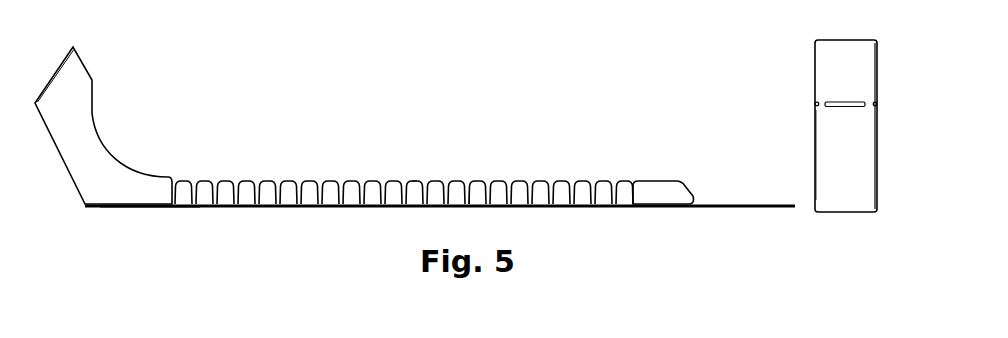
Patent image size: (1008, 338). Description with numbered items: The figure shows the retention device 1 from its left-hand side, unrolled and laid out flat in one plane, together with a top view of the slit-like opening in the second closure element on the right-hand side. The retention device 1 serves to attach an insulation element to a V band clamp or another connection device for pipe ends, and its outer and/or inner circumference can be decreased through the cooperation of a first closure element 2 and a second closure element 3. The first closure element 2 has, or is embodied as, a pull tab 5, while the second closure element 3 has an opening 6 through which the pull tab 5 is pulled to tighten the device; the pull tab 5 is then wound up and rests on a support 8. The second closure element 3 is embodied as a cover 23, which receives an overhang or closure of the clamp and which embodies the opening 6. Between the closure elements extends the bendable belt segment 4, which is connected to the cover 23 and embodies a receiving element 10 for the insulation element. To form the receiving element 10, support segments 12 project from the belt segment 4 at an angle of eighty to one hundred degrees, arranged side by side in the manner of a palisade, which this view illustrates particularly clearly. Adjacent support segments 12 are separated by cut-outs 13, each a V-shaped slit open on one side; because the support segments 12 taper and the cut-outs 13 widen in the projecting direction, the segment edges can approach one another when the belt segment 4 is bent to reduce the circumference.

The retention device 1 is at (371, 124).
The first closure element 2 is at (667, 197).
The second closure element 3 is at (80, 138).
The belt segment 4 is at (287, 206).
The pull tab 5 is at (708, 207).
The opening 6 is at (848, 102).
The support 8 is at (828, 128).
The receiving element 10 is at (277, 163).
The support segments 12 is at (472, 195).
The cut-outs 13 is at (404, 186).
The cover 23 is at (125, 206).